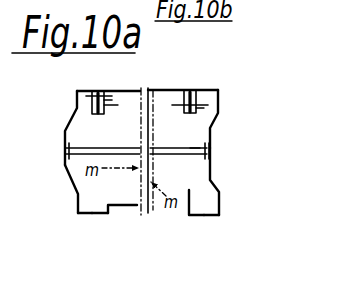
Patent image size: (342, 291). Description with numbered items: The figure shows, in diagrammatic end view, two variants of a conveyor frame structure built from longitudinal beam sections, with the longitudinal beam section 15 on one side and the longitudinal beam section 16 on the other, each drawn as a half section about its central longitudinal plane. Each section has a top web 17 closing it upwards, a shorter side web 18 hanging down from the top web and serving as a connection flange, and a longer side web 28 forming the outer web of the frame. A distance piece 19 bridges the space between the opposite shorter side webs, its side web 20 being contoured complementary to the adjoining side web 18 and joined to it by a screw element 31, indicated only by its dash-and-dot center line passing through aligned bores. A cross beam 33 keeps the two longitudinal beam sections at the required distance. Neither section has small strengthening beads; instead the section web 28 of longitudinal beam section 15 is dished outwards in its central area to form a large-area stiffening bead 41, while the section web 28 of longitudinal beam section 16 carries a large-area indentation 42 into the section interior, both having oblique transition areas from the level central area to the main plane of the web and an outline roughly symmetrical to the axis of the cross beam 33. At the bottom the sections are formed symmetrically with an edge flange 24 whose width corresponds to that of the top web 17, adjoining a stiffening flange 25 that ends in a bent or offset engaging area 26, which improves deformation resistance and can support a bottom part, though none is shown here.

In FIG. 10A, the longitudinal beam section 15 is at (76, 109).
In FIG. 10B, the longitudinal beam section 16 is at (220, 99).
In FIG. 10A, the top web 17 is at (80, 90).
In FIG. 10B, the top web 17 is at (194, 91).
In FIG. 10A, the shorter side web 18 is at (98, 96).
In FIG. 10B, the shorter side web 18 is at (206, 91).
In FIG. 10A, the distance piece 19 is at (112, 98).
In FIG. 10A, the side web 20 is at (106, 78).
In FIG. 10B, the side web 20 is at (189, 91).
In FIG. 10A, the edge flange 24 is at (83, 213).
In FIG. 10B, the edge flange 24 is at (209, 214).
In FIG. 10A, the stiffening flange 25 is at (103, 214).
In FIG. 10B, the stiffening flange 25 is at (190, 194).
In FIG. 10A, the engaging area 26 is at (128, 206).
In FIG. 10A, the longer side web 28 is at (77, 205).
In FIG. 10B, the longer side web 28 is at (220, 200).
In FIG. 10A, the screw element 31 is at (120, 104).
In FIG. 10B, the screw element 31 is at (193, 100).
In FIG. 10B, the cross beam 33 is at (195, 154).
In FIG. 10A, the stiffening bead 41 is at (66, 159).
In FIG. 10B, the indentation 42 is at (209, 147).